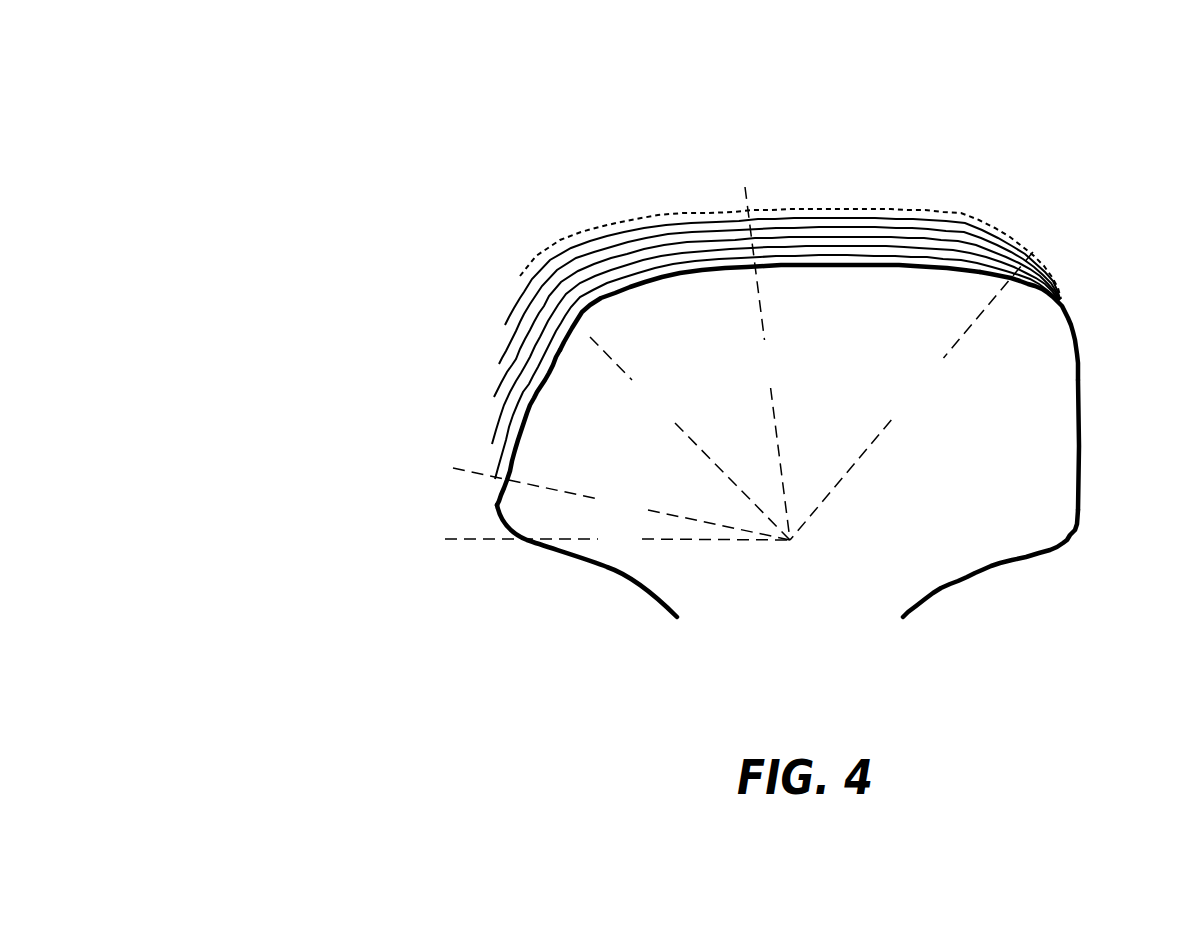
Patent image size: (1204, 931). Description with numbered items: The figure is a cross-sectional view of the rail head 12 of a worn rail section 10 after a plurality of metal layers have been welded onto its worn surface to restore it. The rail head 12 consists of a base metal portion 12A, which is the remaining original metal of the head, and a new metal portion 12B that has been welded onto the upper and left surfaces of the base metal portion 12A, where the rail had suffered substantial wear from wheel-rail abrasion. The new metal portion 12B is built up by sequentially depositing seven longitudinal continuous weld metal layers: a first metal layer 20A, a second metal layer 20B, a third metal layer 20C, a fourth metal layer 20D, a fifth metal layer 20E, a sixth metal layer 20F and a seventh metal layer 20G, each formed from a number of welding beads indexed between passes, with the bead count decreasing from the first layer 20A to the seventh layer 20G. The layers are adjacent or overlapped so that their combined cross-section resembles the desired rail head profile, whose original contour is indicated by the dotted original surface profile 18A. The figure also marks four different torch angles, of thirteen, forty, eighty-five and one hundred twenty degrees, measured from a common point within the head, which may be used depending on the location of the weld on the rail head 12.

The rail section 10 is at (976, 162).
The rail head 12 is at (930, 531).
The base metal portion 12A is at (1033, 505).
The new metal portion 12B is at (302, 212).
The original surface profile 18A is at (985, 252).
The first metal layer 20A is at (497, 503).
The second metal layer 20B is at (490, 478).
The third metal layer 20C is at (492, 446).
The fourth metal layer 20D is at (492, 395).
The fifth metal layer 20E is at (495, 360).
The sixth metal layer 20F is at (505, 325).
The seventh metal layer 20G is at (522, 280).